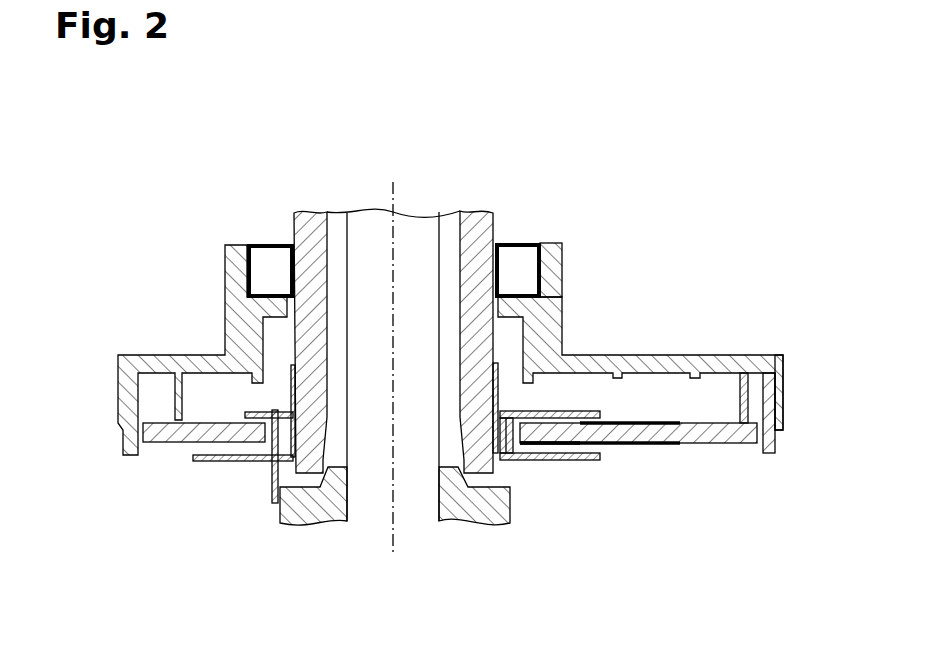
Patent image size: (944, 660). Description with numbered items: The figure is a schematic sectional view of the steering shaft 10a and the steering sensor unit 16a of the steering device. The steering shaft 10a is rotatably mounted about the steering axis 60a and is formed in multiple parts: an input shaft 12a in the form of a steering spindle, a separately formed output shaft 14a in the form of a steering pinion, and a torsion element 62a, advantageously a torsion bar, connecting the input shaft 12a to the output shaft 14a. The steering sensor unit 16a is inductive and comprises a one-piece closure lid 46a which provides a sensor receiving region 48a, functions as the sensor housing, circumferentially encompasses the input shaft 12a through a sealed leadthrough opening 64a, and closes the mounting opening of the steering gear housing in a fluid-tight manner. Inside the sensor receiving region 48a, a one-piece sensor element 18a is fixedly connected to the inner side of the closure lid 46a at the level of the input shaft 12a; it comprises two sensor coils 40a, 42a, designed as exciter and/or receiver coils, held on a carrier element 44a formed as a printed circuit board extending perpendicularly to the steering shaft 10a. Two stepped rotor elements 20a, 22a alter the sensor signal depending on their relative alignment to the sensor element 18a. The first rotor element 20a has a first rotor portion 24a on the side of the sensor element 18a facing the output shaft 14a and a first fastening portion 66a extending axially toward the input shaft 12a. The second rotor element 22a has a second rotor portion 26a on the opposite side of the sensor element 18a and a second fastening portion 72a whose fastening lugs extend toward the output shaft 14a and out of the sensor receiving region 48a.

The steering shaft 10a is at (508, 216).
The input shaft 12a is at (495, 236).
The output shaft 14a is at (478, 513).
The steering sensor unit 16a is at (678, 300).
The sensor element 18a is at (706, 455).
The first rotor element 20a is at (537, 472).
The second rotor element 22a is at (544, 398).
The first rotor portion 24a is at (580, 450).
The second rotor portion 26a is at (580, 422).
The sensor coil 40a is at (647, 422).
The sensor coil 42a is at (667, 444).
The carrier element 44a is at (742, 445).
The closure lid 46a is at (145, 343).
The sensor receiving region 48a is at (726, 403).
The steering axis 60a is at (393, 182).
The torsion element 62a is at (407, 227).
The leadthrough opening 64a is at (283, 226).
The first fastening portion 66a is at (498, 383).
The second fastening portion 72a is at (273, 494).